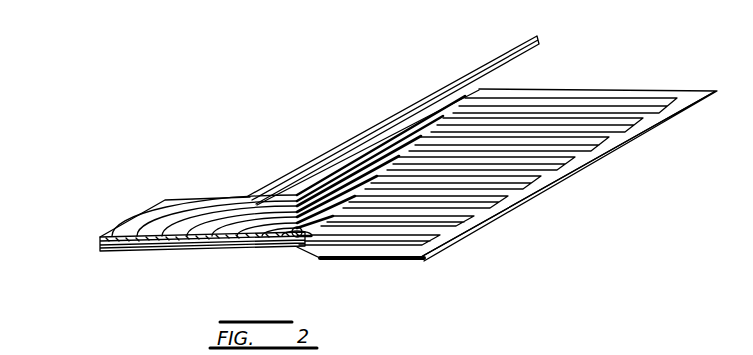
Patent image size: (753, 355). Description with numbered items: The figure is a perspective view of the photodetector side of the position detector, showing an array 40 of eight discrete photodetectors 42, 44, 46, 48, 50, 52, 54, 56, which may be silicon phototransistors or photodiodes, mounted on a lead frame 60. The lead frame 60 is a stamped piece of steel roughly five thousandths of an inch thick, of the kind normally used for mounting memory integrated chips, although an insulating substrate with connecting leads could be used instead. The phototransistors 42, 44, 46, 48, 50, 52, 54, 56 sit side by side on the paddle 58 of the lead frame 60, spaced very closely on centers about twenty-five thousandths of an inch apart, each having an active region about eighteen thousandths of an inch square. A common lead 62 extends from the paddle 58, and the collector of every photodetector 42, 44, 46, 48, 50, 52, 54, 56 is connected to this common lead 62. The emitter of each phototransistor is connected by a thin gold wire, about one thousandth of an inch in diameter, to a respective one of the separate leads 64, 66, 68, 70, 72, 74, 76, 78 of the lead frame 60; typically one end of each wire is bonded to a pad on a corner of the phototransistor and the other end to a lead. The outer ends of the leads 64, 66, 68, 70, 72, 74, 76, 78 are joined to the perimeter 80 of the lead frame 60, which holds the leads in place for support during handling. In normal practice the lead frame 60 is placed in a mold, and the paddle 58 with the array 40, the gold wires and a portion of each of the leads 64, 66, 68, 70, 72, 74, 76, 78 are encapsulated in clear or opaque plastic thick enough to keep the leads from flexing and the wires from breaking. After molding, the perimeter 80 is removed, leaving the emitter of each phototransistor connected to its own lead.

The array 40 is at (100, 233).
The photodetector 42 is at (109, 250).
The photodetector 44 is at (125, 249).
The photodetector 46 is at (156, 251).
The photodetector 48 is at (168, 249).
The photodetector 50 is at (203, 250).
The photodetector 52 is at (213, 249).
The photodetector 54 is at (248, 251).
The photodetector 56 is at (282, 238).
The paddle 58 is at (167, 213).
The lead frame 60 is at (557, 83).
The common lead 62 is at (393, 121).
The lead 64 is at (642, 98).
The lead 66 is at (636, 117).
The lead 68 is at (595, 142).
The lead 70 is at (555, 165).
The lead 72 is at (515, 188).
The lead 74 is at (477, 210).
The lead 76 is at (437, 233).
The lead 78 is at (383, 258).
The perimeter 80 is at (676, 107).